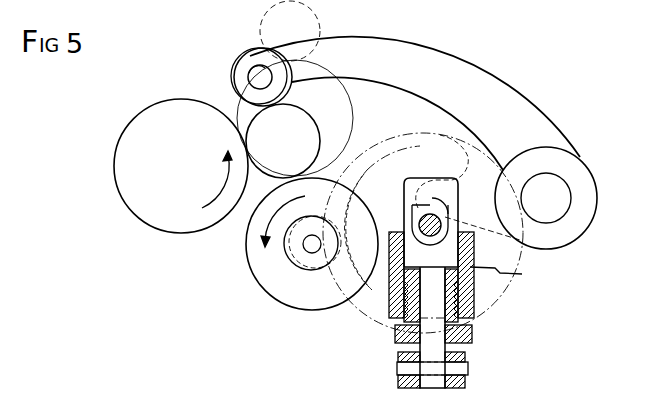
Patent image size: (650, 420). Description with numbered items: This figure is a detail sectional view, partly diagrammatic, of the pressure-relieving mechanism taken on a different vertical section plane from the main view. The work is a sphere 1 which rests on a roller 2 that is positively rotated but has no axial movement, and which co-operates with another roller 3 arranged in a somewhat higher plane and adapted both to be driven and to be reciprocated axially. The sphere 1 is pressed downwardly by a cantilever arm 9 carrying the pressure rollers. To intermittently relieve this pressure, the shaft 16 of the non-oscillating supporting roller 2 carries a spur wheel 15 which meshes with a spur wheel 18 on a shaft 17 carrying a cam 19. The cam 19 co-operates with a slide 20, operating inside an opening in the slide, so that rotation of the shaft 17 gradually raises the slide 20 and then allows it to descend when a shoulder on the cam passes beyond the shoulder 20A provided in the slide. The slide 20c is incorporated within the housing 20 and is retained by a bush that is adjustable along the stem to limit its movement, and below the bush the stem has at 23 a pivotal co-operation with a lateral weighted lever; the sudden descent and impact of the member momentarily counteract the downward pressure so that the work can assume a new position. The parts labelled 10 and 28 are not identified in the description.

The sphere 1 is at (295, 119).
The roller 2 is at (247, 256).
The roller 3 is at (113, 178).
The arm 9 is at (405, 85).
The pivot hub 10 is at (546, 198).
The spur wheel 15 is at (302, 268).
The shaft 16 is at (282, 236).
The shaft 17 is at (423, 233).
The spur wheel 18 is at (368, 304).
The cam 19 is at (443, 216).
The slide 20 is at (431, 250).
The shoulder 20A is at (395, 335).
The slide 20c is at (510, 273).
The pivotal co-operation 23 is at (438, 390).
The washer nut 28 is at (398, 378).